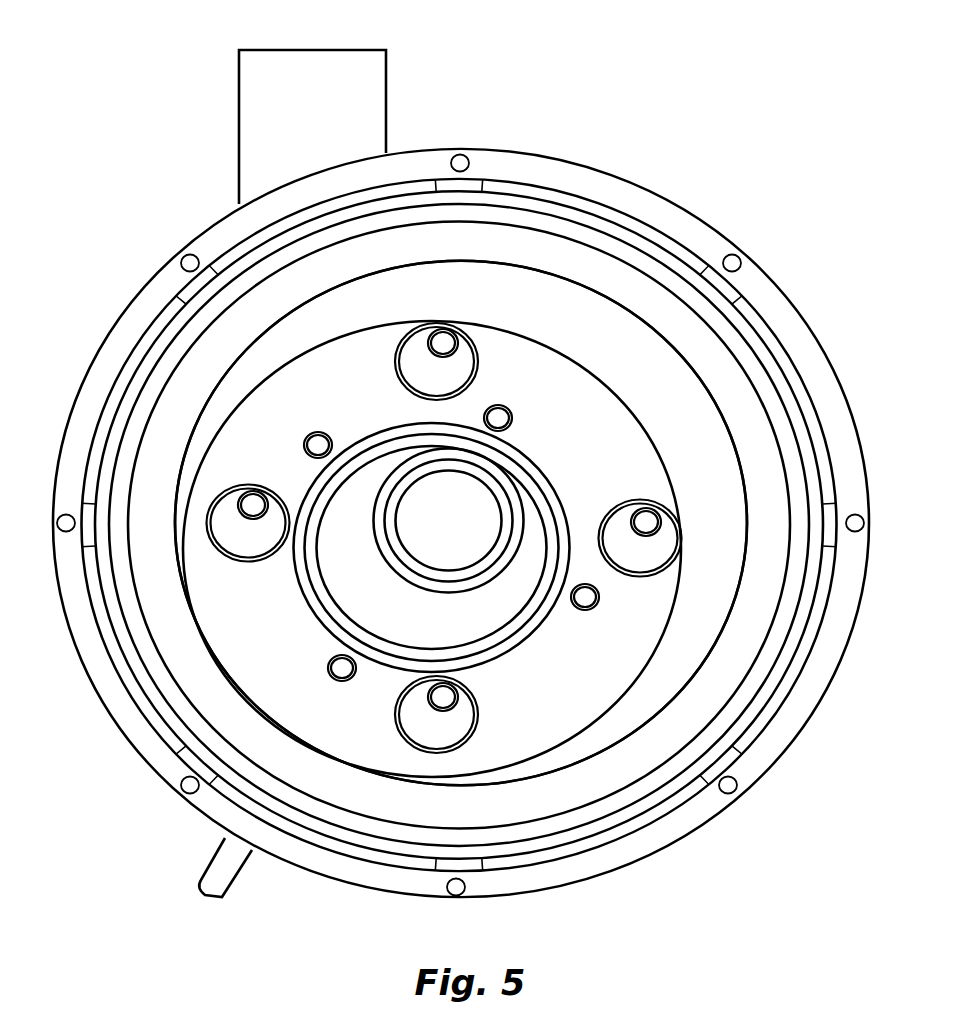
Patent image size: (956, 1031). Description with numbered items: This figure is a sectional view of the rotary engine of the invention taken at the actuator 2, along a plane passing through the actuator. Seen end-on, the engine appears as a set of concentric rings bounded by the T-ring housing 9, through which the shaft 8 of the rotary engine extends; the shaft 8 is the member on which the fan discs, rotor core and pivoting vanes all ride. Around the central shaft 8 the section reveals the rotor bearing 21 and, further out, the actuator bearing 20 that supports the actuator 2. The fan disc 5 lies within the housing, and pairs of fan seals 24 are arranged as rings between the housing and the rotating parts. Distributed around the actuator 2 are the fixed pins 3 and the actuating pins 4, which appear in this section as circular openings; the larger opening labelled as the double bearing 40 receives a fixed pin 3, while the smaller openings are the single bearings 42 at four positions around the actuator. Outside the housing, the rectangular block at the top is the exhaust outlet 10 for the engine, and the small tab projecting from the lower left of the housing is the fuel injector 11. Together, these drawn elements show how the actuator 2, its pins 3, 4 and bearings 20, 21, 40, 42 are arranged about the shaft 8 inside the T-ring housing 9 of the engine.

The actuator 2 is at (315, 405).
The fixed pin 3 is at (647, 520).
The actuating pin 4 is at (507, 403).
The fan disc 5 is at (566, 196).
The shaft 8 is at (403, 553).
The T-ring housing 9 is at (450, 150).
The exhaust outlet 10 is at (285, 123).
The fuel injector 11 is at (233, 878).
The actuator bearing 20 is at (507, 652).
The rotor bearing 21 is at (396, 633).
The fan seal 24 is at (617, 232).
The double bearing 40 is at (635, 578).
The single bearing 42 is at (305, 440).